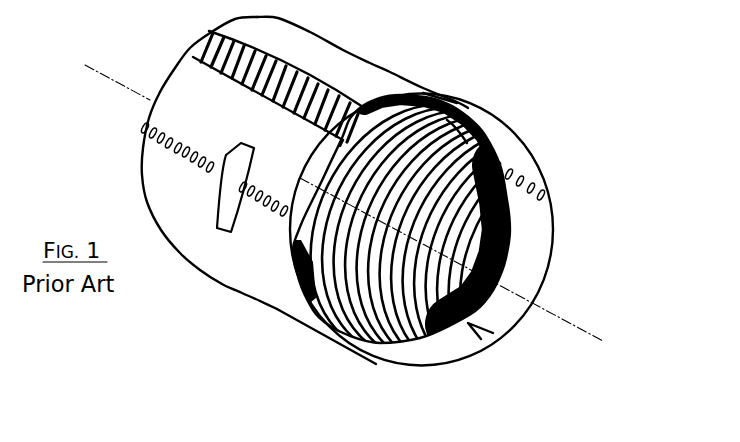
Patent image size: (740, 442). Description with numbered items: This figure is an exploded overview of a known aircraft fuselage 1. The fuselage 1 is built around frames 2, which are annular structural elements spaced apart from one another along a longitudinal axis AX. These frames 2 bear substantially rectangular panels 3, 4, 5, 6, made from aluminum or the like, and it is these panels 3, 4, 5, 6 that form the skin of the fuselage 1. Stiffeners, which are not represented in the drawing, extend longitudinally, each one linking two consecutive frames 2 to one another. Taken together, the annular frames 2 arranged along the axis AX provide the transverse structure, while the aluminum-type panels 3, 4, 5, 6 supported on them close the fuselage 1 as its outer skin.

The aircraft fuselage 1 is at (522, 90).
The frames 2 is at (214, 42).
The panel 3 is at (382, 67).
The panel 4 is at (553, 229).
The panel 5 is at (452, 342).
The panel 6 is at (157, 151).
The longitudinal axis AX is at (602, 340).